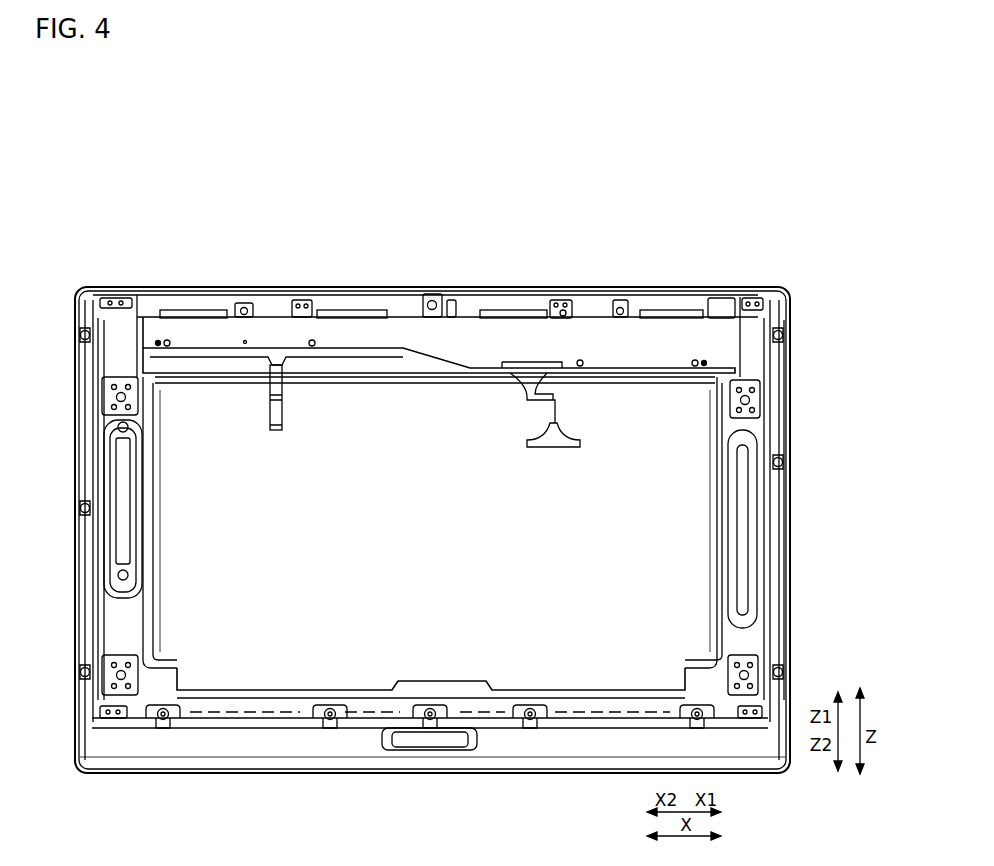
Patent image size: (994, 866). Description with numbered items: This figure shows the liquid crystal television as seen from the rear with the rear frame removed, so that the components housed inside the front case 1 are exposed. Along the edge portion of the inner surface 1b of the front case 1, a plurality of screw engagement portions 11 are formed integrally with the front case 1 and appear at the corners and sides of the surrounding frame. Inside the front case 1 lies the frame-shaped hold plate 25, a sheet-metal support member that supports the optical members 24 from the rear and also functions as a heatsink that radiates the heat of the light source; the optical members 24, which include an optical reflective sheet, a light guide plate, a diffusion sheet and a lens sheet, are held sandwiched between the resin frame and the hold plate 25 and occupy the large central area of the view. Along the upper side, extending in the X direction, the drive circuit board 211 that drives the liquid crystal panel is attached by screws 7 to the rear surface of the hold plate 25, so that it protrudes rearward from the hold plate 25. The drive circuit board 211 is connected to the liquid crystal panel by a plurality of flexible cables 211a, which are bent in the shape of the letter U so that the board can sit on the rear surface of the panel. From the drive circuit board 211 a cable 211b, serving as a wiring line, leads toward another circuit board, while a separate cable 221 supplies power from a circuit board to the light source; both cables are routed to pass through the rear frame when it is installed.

The front case 1 is at (257, 762).
The inner surface 1b is at (573, 758).
The screws 7 is at (683, 417).
The screw engagement portions 11 is at (430, 298).
The optical members 24 is at (670, 542).
The hold plate 25 is at (140, 617).
The drive circuit board 211 is at (440, 358).
The flexible cables 211a is at (673, 312).
The cable 211b is at (555, 447).
The cable 221 is at (272, 432).